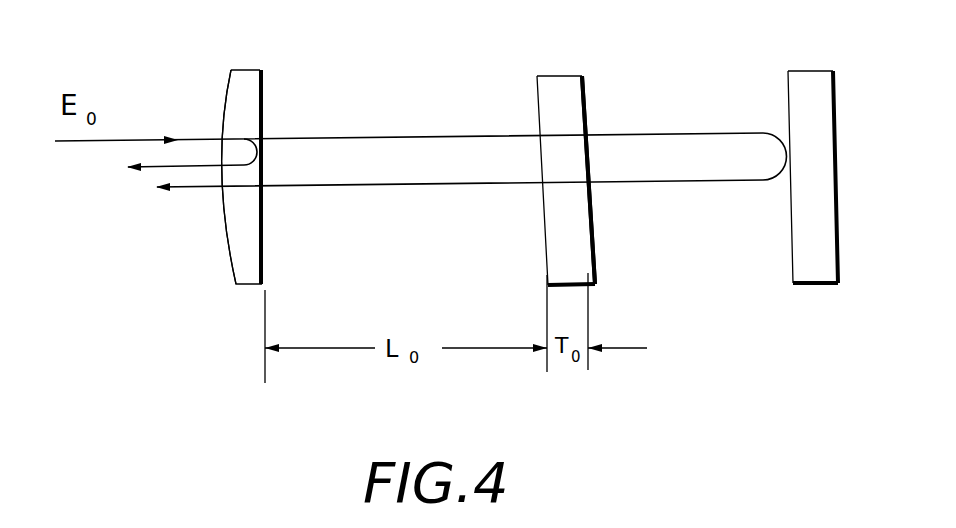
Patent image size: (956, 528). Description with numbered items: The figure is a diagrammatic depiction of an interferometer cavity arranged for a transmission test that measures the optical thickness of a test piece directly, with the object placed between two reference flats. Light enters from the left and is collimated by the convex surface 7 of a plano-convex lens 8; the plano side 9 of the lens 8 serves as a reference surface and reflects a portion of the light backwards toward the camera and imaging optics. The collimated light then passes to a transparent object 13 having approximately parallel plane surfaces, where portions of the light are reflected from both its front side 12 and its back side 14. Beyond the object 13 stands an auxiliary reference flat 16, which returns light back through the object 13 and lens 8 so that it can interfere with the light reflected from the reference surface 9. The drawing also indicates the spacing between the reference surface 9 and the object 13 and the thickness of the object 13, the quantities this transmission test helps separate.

The convex surface 7 is at (226, 88).
The plano-convex lens 8 is at (229, 250).
The plano side 9 is at (266, 90).
The front side 12 is at (533, 93).
The transparent object 13 is at (594, 212).
The back side 14 is at (590, 90).
The auxiliary reference flat 16 is at (784, 95).